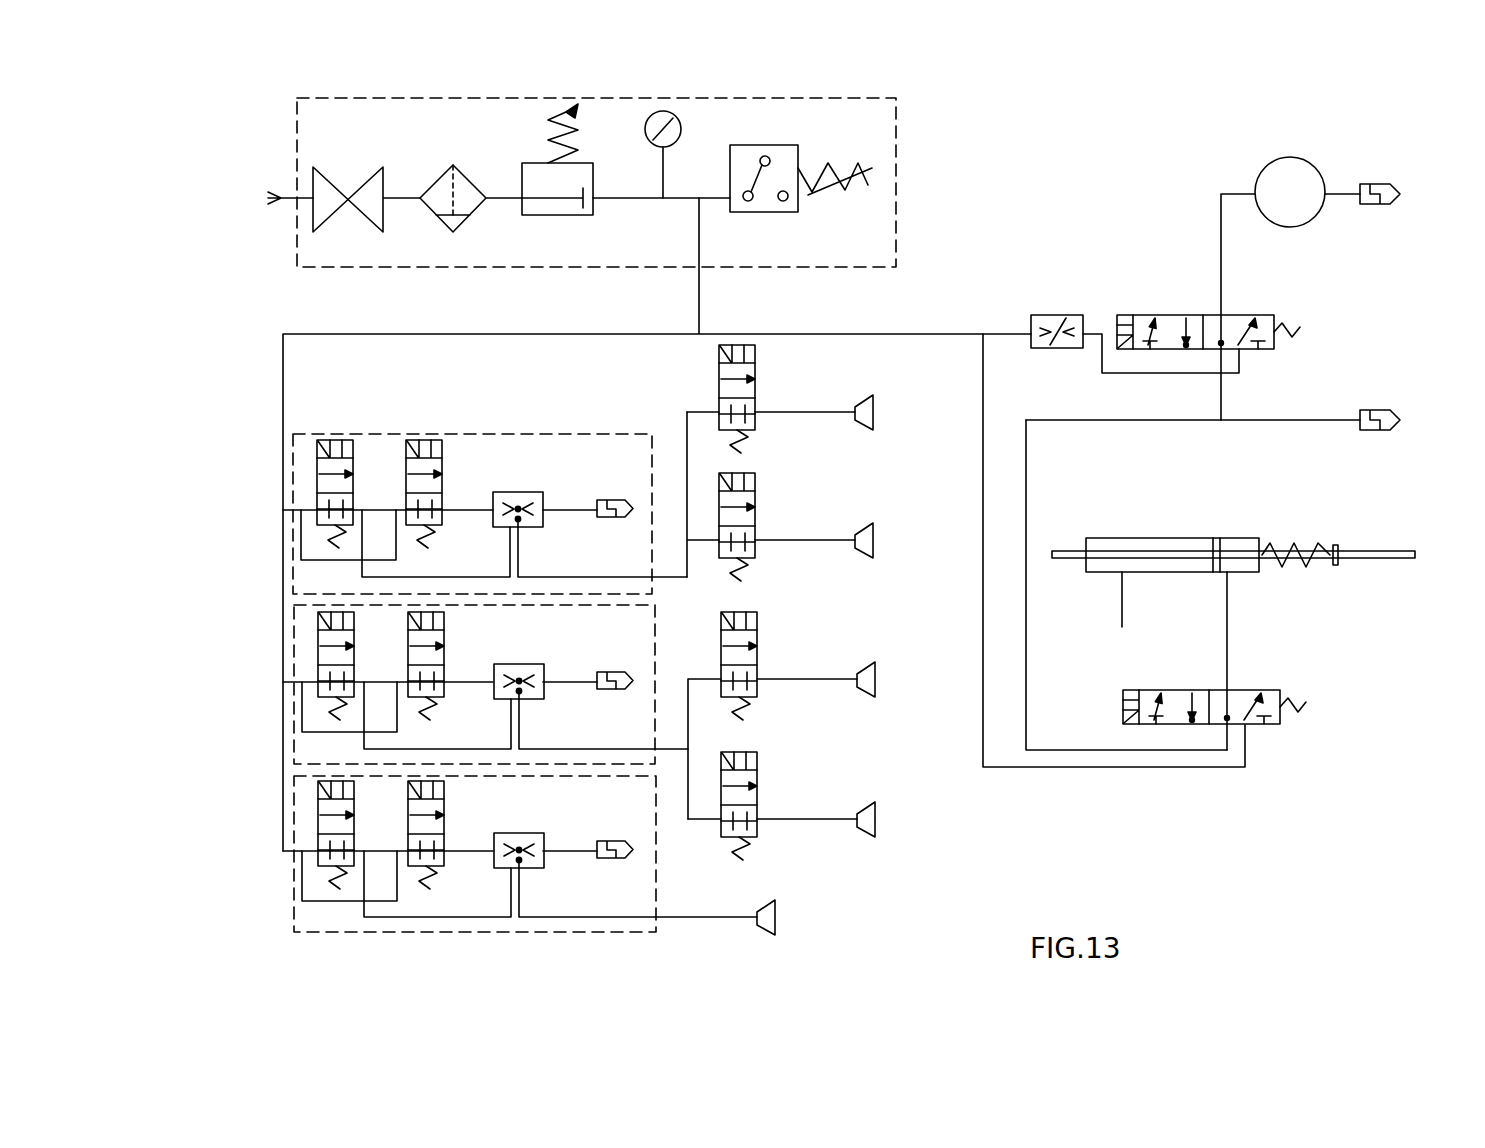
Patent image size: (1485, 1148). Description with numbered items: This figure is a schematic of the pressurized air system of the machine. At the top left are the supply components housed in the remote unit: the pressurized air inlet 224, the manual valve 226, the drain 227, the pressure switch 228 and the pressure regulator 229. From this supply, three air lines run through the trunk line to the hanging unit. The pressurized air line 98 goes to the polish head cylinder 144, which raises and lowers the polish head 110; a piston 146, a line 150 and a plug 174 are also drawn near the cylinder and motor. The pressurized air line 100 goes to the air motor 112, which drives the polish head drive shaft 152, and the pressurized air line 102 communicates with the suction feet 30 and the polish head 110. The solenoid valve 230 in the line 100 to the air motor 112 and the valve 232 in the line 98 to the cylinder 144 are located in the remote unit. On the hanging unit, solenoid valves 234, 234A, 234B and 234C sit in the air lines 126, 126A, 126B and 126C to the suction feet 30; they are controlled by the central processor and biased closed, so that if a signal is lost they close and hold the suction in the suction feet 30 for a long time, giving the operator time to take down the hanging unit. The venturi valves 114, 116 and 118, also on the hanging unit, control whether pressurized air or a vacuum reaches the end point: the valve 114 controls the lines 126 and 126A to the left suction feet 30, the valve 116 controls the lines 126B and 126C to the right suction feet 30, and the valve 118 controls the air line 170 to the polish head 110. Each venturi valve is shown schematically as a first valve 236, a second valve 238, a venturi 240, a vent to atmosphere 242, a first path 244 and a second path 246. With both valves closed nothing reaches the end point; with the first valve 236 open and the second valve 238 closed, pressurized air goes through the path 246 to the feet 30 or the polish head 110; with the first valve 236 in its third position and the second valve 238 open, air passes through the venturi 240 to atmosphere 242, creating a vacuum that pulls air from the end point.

The pressurized air inlet 224 is at (283, 196).
The manual valve 226 is at (335, 170).
The drain 227 is at (458, 165).
The pressure regulator 229 is at (578, 112).
The pressure switch 228 is at (798, 148).
The pressurized air line 102 is at (283, 412).
The venturi valve 114 is at (485, 470).
The venturi valve 116 is at (662, 610).
The venturi valve 118 is at (662, 878).
The first valve 236 is at (350, 460).
The second valve 238 is at (441, 475).
The venturi 240 is at (533, 492).
The vent to atmosphere 242 is at (620, 517).
The first path 244 is at (466, 508).
The second path 246 is at (425, 577).
The solenoid valve 234 is at (772, 366).
The solenoid valve 234A is at (772, 476).
The solenoid valve 234B is at (782, 620).
The solenoid valve 234C is at (780, 760).
The air line 126 is at (812, 412).
The air line 126A is at (800, 540).
The air line 126B is at (793, 679).
The air line 126C is at (790, 819).
The suction feet 30 is at (873, 412).
The polish head 110 is at (780, 910).
The air line 170 is at (683, 918).
The pressurized air line 100 is at (1221, 228).
The air motor 112 is at (1287, 157).
The muffler 174 is at (1340, 190).
The solenoid valve 230 is at (1250, 297).
The valve 232 is at (1257, 677).
The polish head cylinder 144 is at (1172, 538).
The piston 146 is at (1218, 542).
The polish head drive shaft 152 is at (1370, 548).
The line 150 is at (1122, 600).
The pressurized air line 98 is at (1228, 608).